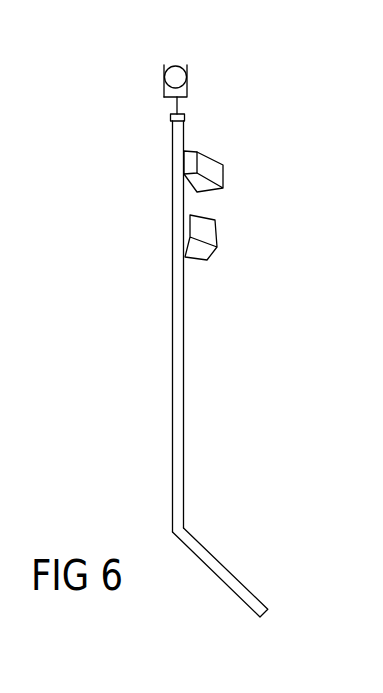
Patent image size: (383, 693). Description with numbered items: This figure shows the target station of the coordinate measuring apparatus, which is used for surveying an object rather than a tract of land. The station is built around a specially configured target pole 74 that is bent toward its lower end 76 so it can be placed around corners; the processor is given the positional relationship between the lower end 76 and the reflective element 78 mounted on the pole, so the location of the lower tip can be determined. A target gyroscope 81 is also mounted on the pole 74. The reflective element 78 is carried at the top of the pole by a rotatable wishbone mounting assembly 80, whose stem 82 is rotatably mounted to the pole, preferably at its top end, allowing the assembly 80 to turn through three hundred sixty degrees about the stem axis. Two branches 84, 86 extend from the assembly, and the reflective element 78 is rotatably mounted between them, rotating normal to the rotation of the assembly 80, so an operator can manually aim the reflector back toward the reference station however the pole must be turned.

The target pole 74 is at (152, 179).
The lower end 76 is at (203, 486).
The reflective element 78 is at (186, 72).
The rotatable wishbone mounting assembly 80 is at (187, 98).
The target gyroscope 81 is at (218, 248).
The stem 82 is at (175, 103).
The branch 84 is at (188, 75).
The branch 86 is at (165, 80).